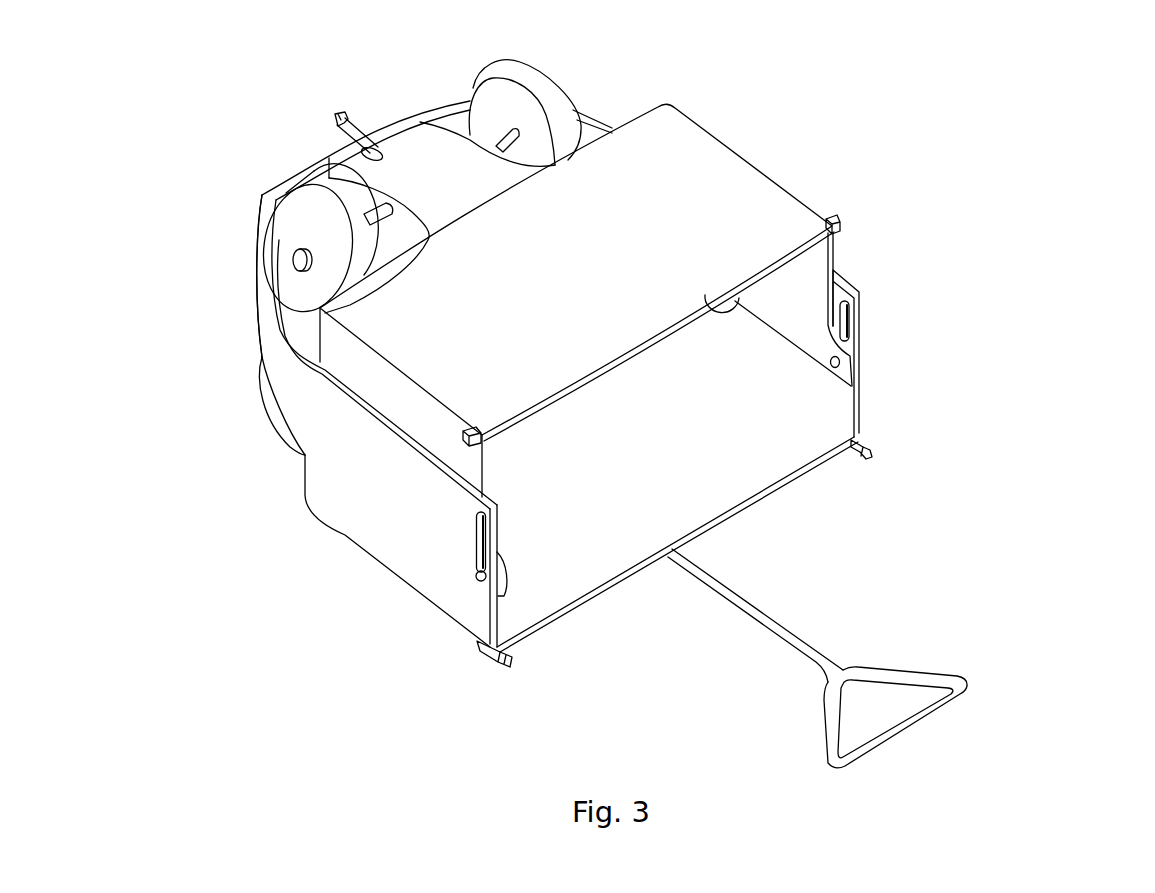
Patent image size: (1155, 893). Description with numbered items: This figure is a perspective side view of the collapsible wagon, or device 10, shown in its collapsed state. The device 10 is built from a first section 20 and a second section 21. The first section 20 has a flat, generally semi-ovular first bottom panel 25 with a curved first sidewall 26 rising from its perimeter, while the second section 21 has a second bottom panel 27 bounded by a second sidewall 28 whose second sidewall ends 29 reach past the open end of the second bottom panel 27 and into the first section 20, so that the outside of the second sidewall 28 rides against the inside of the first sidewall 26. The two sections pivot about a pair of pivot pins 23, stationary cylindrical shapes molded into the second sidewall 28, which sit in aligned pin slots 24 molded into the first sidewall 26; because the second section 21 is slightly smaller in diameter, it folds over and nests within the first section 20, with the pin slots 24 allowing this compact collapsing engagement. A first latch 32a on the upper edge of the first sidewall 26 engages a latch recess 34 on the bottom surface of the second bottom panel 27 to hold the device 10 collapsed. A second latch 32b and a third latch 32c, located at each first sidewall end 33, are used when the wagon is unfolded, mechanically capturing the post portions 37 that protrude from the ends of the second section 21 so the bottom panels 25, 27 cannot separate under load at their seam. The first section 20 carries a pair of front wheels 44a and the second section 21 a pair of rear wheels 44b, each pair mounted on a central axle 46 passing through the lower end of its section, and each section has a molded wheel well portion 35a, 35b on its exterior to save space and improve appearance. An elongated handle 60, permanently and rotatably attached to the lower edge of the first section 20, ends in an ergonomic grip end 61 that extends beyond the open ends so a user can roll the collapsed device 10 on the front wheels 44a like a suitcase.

The collapsible wagon 10 is at (1072, 128).
The first section 20 is at (353, 581).
The second section 21 is at (767, 119).
The pivot pin 23 is at (479, 581).
The pin slot 24 is at (478, 555).
The first bottom panel 25 is at (755, 475).
The first sidewall 26 is at (348, 523).
The second bottom panel 27 is at (760, 210).
The second sidewall 28 is at (463, 460).
The second sidewall end 29 is at (508, 577).
The first latch 32a is at (354, 131).
The second latch 32b is at (861, 454).
The third latch 32c is at (496, 661).
The first sidewall end 33 is at (495, 612).
The latch recess 34 is at (362, 153).
The wheel well portion 35a is at (272, 378).
The wheel well portion 35b is at (465, 126).
The post portion 37 is at (839, 216).
The front wheel 44a is at (268, 392).
The rear wheel 44b is at (543, 104).
The central axle 46 is at (493, 140).
The handle 60 is at (790, 636).
The grip end 61 is at (869, 667).